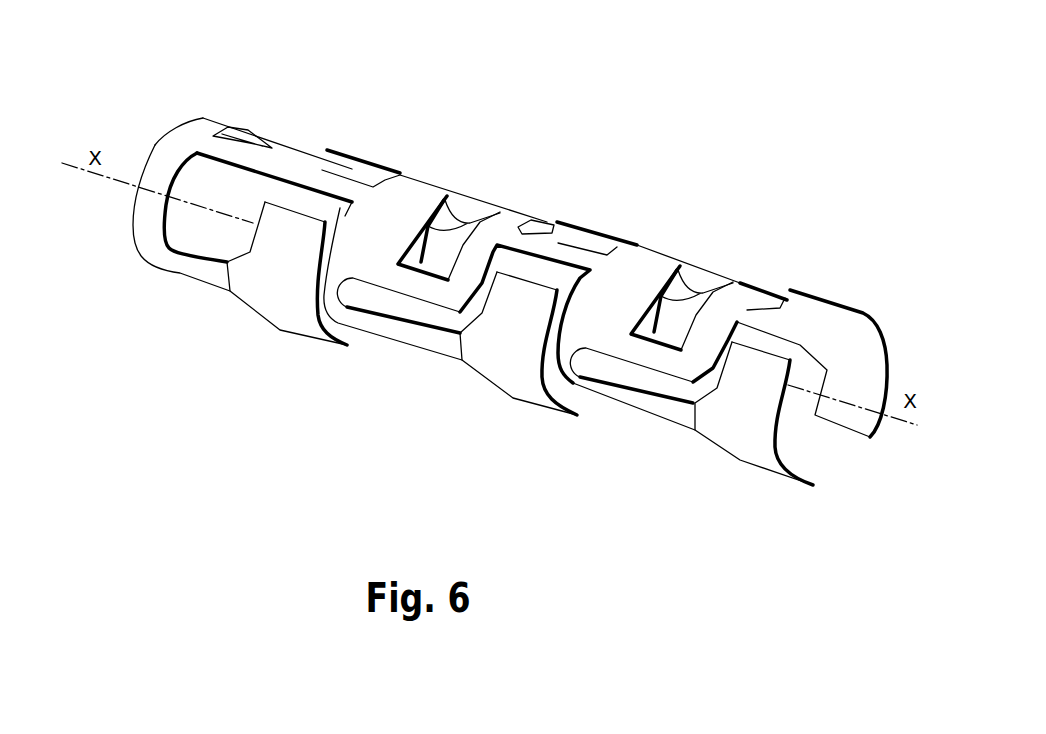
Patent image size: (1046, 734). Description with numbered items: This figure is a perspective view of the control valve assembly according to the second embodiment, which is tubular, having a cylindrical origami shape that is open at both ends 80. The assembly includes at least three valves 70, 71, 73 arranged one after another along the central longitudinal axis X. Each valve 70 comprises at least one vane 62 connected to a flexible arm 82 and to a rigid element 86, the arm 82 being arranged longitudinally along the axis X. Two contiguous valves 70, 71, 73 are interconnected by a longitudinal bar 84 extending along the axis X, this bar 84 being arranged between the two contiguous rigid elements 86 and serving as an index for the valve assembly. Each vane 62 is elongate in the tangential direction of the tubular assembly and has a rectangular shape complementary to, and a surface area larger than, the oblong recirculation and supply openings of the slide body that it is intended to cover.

The vane 62 is at (285, 307).
The valve 70 is at (232, 340).
The valve 71 is at (462, 410).
The valve 73 is at (697, 478).
The end 80 is at (154, 141).
The flexible arm 82 is at (185, 265).
The longitudinal bar 84 is at (293, 170).
The rigid element 86 is at (190, 143).